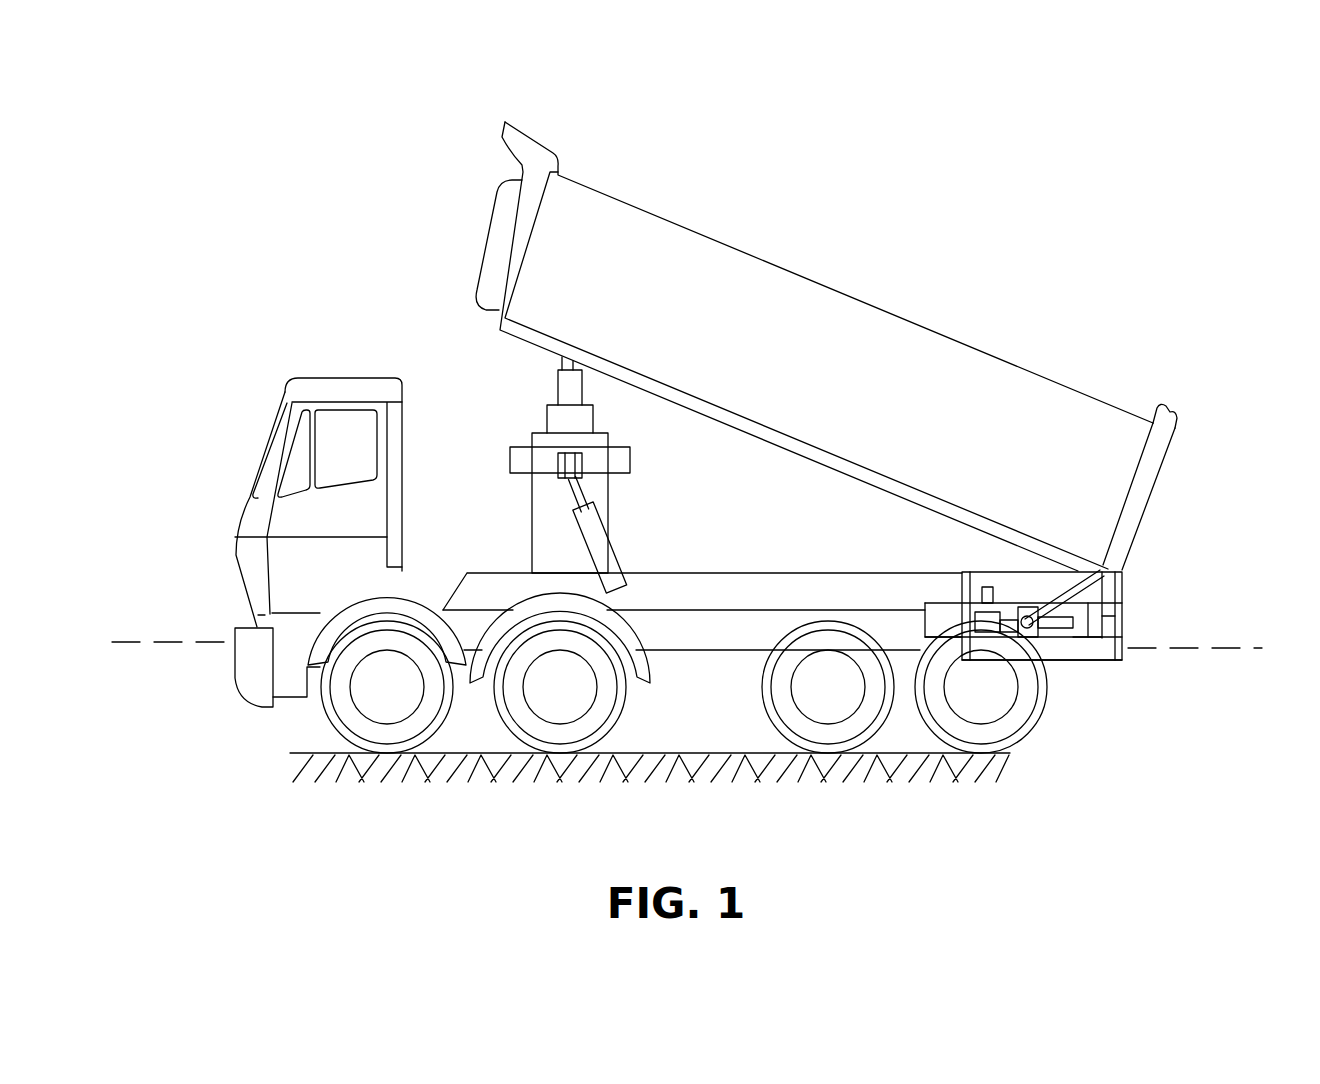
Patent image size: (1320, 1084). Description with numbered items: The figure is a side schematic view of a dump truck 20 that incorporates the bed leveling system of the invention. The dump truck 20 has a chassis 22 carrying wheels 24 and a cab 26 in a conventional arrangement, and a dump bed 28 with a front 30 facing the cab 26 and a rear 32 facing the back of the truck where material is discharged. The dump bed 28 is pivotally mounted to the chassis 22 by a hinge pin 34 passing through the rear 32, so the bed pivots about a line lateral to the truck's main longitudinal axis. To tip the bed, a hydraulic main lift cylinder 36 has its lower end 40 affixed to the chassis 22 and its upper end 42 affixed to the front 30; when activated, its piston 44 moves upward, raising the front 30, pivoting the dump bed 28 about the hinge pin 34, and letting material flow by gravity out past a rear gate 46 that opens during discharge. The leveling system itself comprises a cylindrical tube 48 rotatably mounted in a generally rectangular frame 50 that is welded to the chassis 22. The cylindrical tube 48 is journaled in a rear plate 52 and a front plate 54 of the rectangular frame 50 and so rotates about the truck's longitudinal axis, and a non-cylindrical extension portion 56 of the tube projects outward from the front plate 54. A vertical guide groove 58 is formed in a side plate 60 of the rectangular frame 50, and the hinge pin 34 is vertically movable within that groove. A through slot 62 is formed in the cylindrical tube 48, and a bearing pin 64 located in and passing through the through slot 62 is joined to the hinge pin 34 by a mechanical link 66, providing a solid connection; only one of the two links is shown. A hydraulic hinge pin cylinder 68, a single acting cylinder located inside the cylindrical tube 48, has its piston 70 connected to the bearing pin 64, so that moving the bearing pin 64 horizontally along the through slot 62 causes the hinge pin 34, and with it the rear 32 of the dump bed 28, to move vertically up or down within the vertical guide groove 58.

The dump truck 20 is at (372, 286).
The chassis 22 is at (718, 632).
The wheels 24 is at (375, 734).
The cab 26 is at (248, 517).
The dump bed 28 is at (685, 262).
The front 30 is at (503, 227).
The rear 32 is at (1128, 408).
The hinge pin 34 is at (1125, 568).
The hydraulic main lift cylinder 36 is at (612, 496).
The lower end 40 is at (518, 572).
The upper end 42 is at (556, 366).
The piston 44 is at (573, 413).
The rear gate 46 is at (1148, 478).
The cylindrical tube 48 is at (1085, 635).
The rectangular frame 50 is at (1105, 657).
The rear plate 52 is at (1104, 616).
The front plate 54 is at (962, 583).
The non-cylindrical extension portion 56 is at (943, 623).
The vertical guide groove 58 is at (1105, 628).
The side plate 60 is at (1105, 603).
The through slot 62 is at (1068, 633).
The bearing pin 64 is at (1010, 625).
The mechanical link 66 is at (1040, 623).
The hydraulic hinge pin cylinder 68 is at (988, 634).
The piston 70 is at (997, 632).